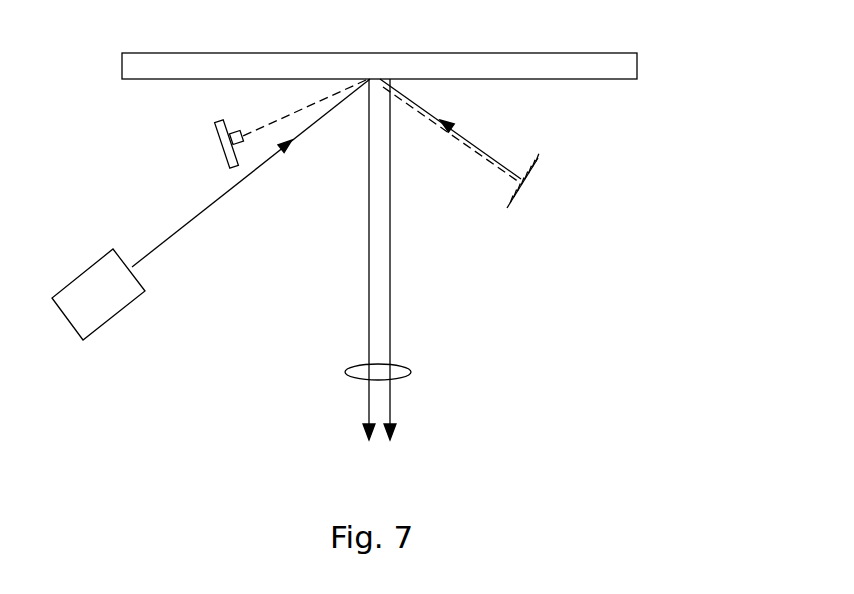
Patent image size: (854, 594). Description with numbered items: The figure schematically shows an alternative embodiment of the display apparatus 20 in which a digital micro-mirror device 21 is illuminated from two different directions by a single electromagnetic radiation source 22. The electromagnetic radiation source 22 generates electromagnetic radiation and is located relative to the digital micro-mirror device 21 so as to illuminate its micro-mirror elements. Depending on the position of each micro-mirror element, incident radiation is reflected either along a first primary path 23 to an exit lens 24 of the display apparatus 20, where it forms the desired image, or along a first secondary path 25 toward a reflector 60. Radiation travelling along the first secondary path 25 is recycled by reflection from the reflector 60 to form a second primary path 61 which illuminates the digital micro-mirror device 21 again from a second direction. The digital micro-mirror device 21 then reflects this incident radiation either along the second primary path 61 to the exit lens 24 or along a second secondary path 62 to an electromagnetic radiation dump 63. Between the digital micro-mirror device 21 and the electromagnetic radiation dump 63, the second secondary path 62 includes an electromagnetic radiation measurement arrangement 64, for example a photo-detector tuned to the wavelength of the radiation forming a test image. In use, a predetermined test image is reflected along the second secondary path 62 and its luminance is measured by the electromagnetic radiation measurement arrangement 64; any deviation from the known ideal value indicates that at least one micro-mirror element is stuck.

The display apparatus 20 is at (662, 183).
The digital micro-mirror device 21 is at (627, 65).
The electromagnetic radiation source 22 is at (83, 288).
The first primary path 23 is at (369, 403).
The exit lens 24 is at (400, 373).
The first secondary path 25 is at (448, 128).
The reflector 60 is at (507, 208).
The second primary path 61 is at (390, 403).
The second secondary path 62 is at (280, 118).
The electromagnetic radiation dump 63 is at (228, 158).
The electromagnetic radiation measurement arrangement 64 is at (234, 130).